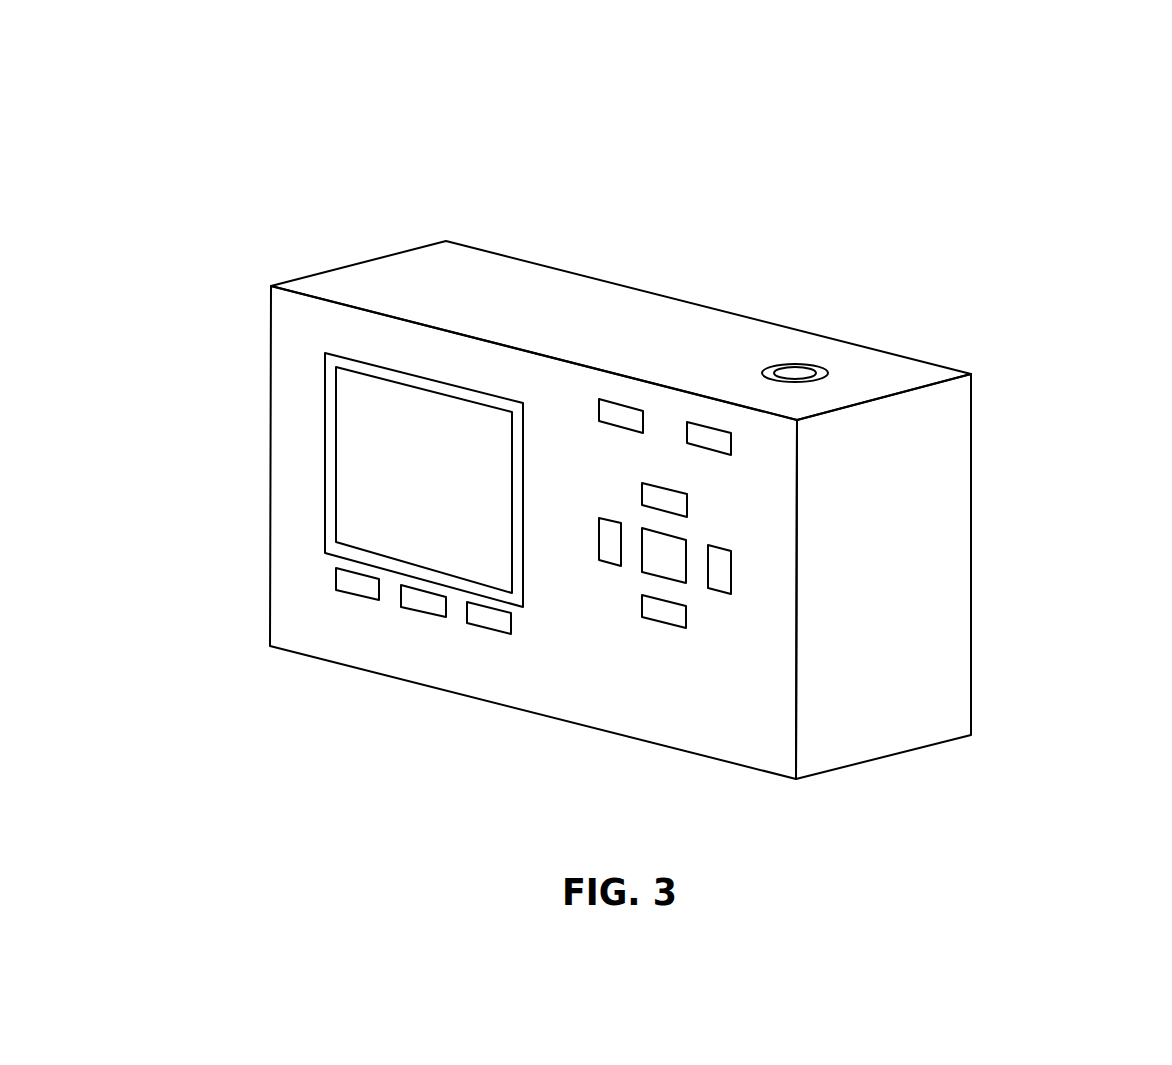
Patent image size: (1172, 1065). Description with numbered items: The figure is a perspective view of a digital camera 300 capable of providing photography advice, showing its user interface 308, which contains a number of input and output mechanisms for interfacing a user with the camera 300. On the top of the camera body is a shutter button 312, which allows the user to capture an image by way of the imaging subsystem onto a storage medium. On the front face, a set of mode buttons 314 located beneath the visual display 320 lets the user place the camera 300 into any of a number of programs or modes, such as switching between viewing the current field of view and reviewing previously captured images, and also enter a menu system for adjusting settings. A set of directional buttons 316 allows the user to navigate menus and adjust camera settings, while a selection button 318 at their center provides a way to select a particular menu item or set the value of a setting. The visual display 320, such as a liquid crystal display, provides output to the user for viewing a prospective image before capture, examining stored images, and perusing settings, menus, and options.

The digital camera 300 is at (1098, 145).
The user interface 308 is at (165, 645).
The shutter button 312 is at (798, 367).
The mode buttons 314 is at (421, 612).
The directional buttons 316 is at (687, 510).
The selection button 318 is at (642, 572).
The visual display 320 is at (325, 510).